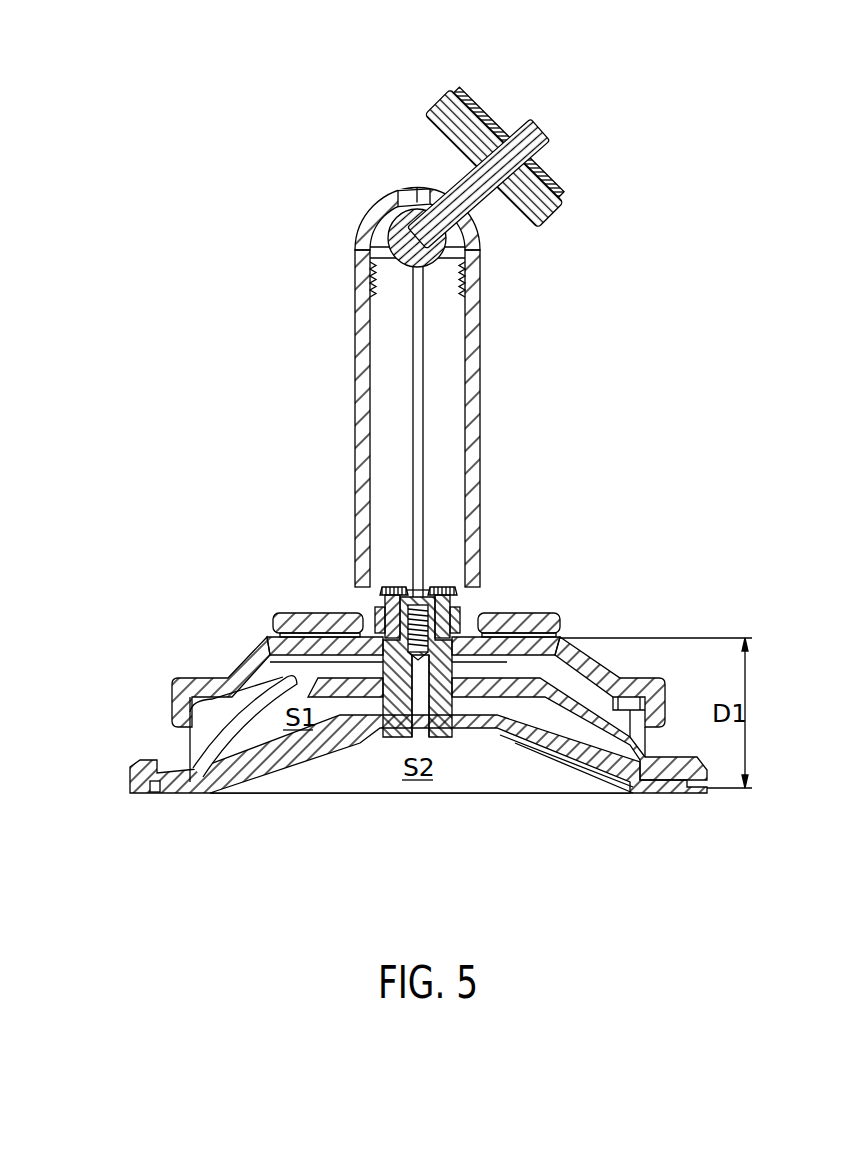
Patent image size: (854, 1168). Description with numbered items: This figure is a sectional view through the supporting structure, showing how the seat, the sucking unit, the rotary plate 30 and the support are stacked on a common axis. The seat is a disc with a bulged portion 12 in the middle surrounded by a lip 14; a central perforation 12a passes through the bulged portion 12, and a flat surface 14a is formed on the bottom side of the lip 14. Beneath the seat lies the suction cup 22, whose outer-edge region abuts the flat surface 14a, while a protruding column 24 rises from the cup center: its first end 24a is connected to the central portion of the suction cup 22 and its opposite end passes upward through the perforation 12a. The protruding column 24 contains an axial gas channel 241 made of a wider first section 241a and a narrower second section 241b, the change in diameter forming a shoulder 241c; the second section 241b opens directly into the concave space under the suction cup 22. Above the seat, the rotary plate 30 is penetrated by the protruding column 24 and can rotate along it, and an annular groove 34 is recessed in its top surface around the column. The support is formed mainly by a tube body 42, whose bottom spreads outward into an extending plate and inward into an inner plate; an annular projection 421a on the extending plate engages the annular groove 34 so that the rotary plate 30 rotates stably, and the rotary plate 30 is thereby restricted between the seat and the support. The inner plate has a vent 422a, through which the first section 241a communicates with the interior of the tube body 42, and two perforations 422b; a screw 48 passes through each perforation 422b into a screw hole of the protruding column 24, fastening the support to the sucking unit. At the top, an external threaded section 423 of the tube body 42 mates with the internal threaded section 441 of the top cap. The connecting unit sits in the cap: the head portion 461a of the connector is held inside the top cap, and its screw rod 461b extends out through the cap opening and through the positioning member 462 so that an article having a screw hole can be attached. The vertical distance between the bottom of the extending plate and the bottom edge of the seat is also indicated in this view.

The bulged portion 12 is at (393, 703).
The perforation 12a is at (262, 652).
The lip 14 is at (374, 799).
The flat surface 14a is at (157, 780).
The suction cup 22 is at (567, 760).
The protruding column 24 is at (416, 729).
The first end 24a is at (440, 737).
The rotary plate 30 is at (390, 684).
The annular groove 34 is at (377, 608).
The tube body 42 is at (321, 388).
The screw 48 is at (400, 588).
The gas channel 241 is at (505, 571).
The first section 241a is at (458, 596).
The second section 241b is at (462, 637).
The shoulder 241c is at (455, 620).
The annular projection 421a is at (455, 620).
The vent 422a is at (418, 596).
The perforation 422b is at (392, 597).
The external threaded section 423 is at (358, 290).
The internal threaded section 441 is at (462, 279).
The head portion 461a is at (397, 230).
The screw rod 461b is at (505, 128).
The positioning member 462 is at (428, 103).